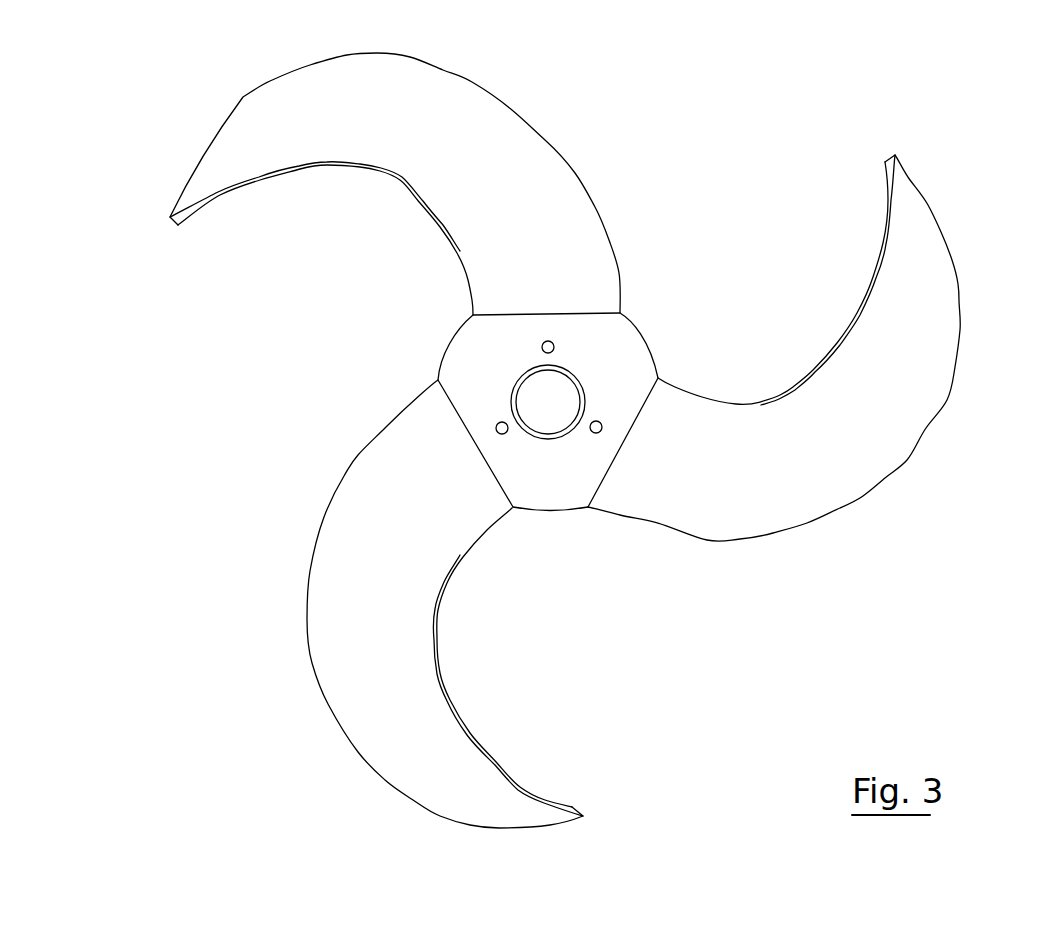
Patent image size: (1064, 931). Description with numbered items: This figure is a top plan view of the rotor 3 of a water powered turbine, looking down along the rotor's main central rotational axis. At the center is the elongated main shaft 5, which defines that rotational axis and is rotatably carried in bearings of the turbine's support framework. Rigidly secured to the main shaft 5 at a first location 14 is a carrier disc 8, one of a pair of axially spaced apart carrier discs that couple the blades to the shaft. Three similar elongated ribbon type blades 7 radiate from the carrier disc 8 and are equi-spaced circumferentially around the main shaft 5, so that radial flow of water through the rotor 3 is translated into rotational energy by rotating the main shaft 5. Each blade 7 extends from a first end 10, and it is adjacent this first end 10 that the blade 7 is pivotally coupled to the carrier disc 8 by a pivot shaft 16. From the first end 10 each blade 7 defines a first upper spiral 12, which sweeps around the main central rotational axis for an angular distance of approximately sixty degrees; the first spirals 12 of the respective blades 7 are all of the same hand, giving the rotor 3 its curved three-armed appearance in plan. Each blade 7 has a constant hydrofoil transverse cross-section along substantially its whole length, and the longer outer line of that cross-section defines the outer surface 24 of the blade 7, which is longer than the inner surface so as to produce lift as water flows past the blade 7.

The rotor 3 is at (958, 177).
The main shaft 5 is at (548, 400).
The blade 7 is at (477, 98).
The carrier disc 8 is at (546, 497).
The first end 10 is at (558, 313).
The first upper spiral 12 is at (415, 170).
The first location 14 is at (517, 388).
The pivot shaft 16 is at (542, 347).
The outer surface 24 is at (557, 158).